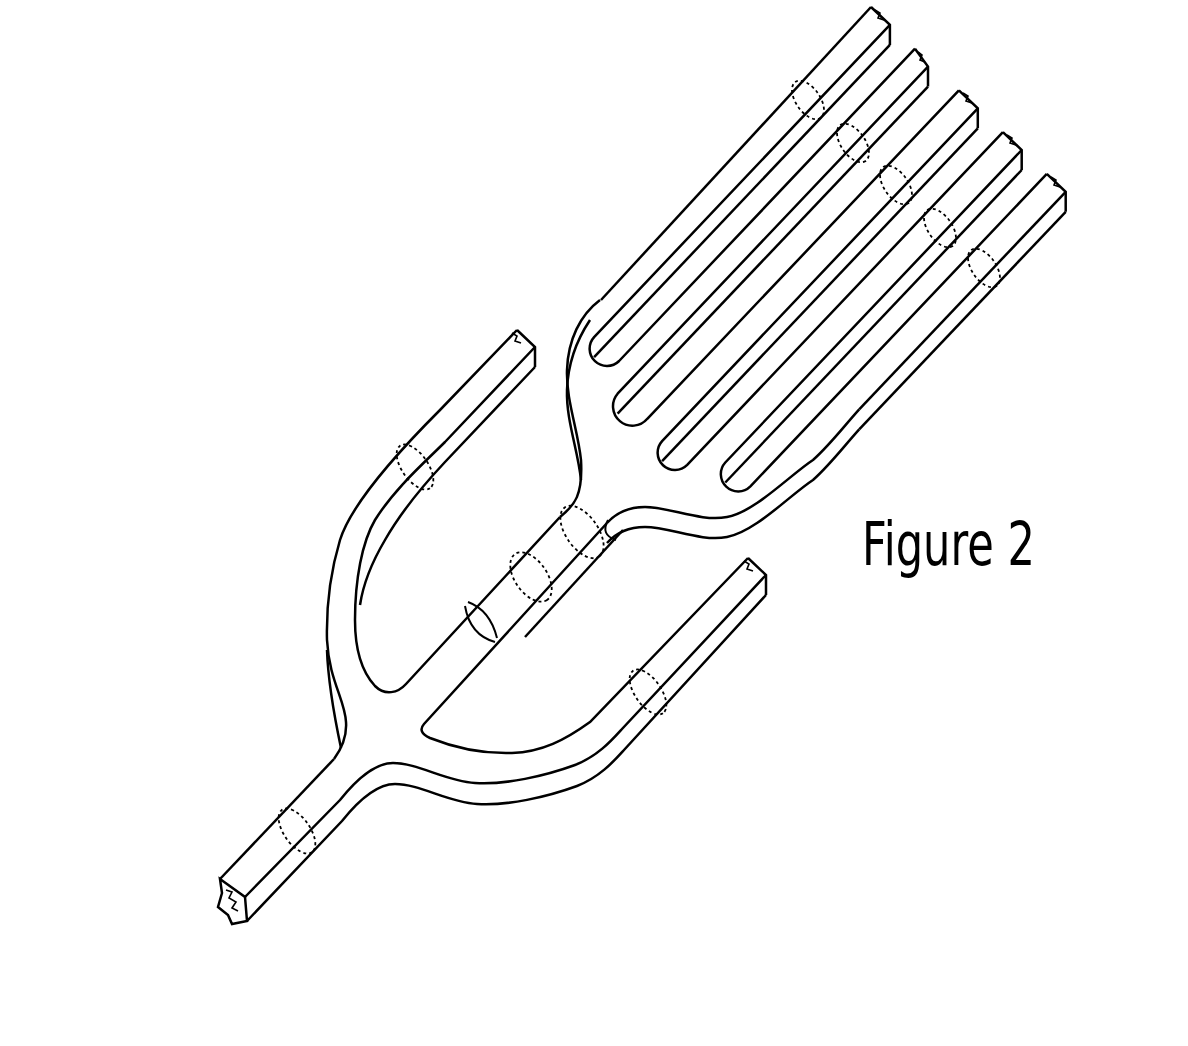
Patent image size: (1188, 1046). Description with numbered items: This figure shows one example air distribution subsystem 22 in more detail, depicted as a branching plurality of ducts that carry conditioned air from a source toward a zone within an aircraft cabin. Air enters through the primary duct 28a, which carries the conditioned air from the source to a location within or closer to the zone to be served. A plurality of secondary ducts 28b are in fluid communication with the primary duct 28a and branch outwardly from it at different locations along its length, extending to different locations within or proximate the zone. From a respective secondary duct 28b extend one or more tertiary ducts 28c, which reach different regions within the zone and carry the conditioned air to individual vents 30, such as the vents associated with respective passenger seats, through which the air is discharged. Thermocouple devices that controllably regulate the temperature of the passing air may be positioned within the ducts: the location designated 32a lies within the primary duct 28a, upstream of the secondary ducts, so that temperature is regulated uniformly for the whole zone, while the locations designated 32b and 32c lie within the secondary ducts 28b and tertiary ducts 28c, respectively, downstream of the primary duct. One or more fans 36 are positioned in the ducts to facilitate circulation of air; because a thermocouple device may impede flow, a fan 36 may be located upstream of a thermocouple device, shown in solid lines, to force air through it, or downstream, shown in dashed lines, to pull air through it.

The air distribution subsystem 22 is at (546, 242).
The primary duct 28a is at (320, 793).
The secondary ducts 28b is at (467, 400).
The tertiary ducts 28c is at (780, 210).
The vents 30 is at (892, 12).
The thermocouple device location in primary duct 32a is at (290, 803).
The thermocouple device location in secondary ducts 32b is at (410, 446).
The thermocouple device location in tertiary ducts 32c is at (813, 75).
The fan 36 is at (619, 528).